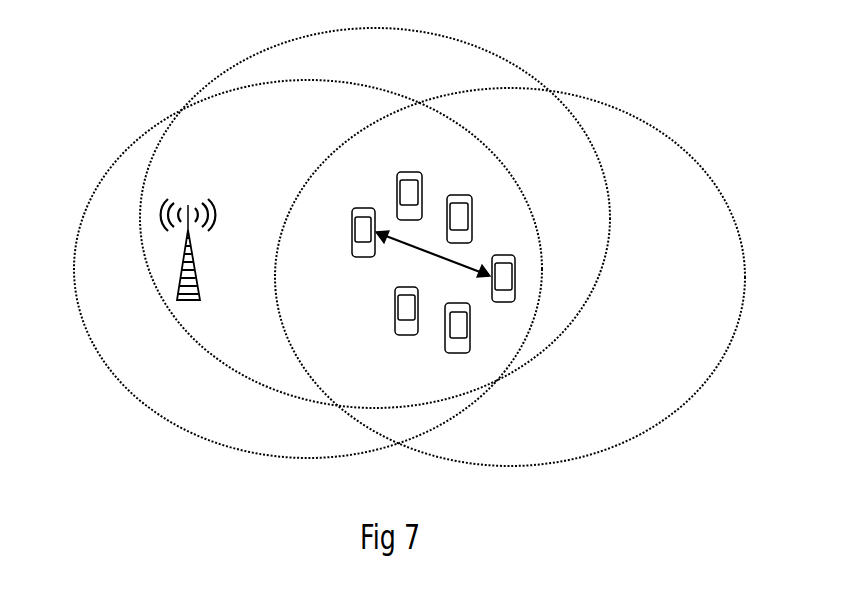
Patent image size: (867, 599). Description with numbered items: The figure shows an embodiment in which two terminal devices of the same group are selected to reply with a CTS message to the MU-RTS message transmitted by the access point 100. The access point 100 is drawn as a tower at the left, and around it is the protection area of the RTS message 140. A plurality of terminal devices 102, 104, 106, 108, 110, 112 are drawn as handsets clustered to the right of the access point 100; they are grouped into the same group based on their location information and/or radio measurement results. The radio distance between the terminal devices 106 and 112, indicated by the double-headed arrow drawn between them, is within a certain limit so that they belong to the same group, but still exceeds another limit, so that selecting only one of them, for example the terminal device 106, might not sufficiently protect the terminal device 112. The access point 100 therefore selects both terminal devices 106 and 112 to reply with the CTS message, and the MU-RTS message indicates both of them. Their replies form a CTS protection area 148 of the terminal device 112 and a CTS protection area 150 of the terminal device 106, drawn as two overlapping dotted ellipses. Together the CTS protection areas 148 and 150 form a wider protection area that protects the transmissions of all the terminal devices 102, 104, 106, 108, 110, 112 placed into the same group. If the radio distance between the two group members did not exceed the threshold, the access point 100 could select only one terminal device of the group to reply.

The access point 100 is at (178, 272).
The terminal device 102 is at (424, 192).
The terminal device 104 is at (475, 220).
The terminal device 106 is at (517, 277).
The terminal device 108 is at (473, 337).
The terminal device 110 is at (392, 310).
The terminal device 112 is at (352, 235).
The protection area of RTS message 140 is at (110, 167).
The CTS protection area 148 is at (470, 43).
The CTS protection area 150 is at (657, 128).